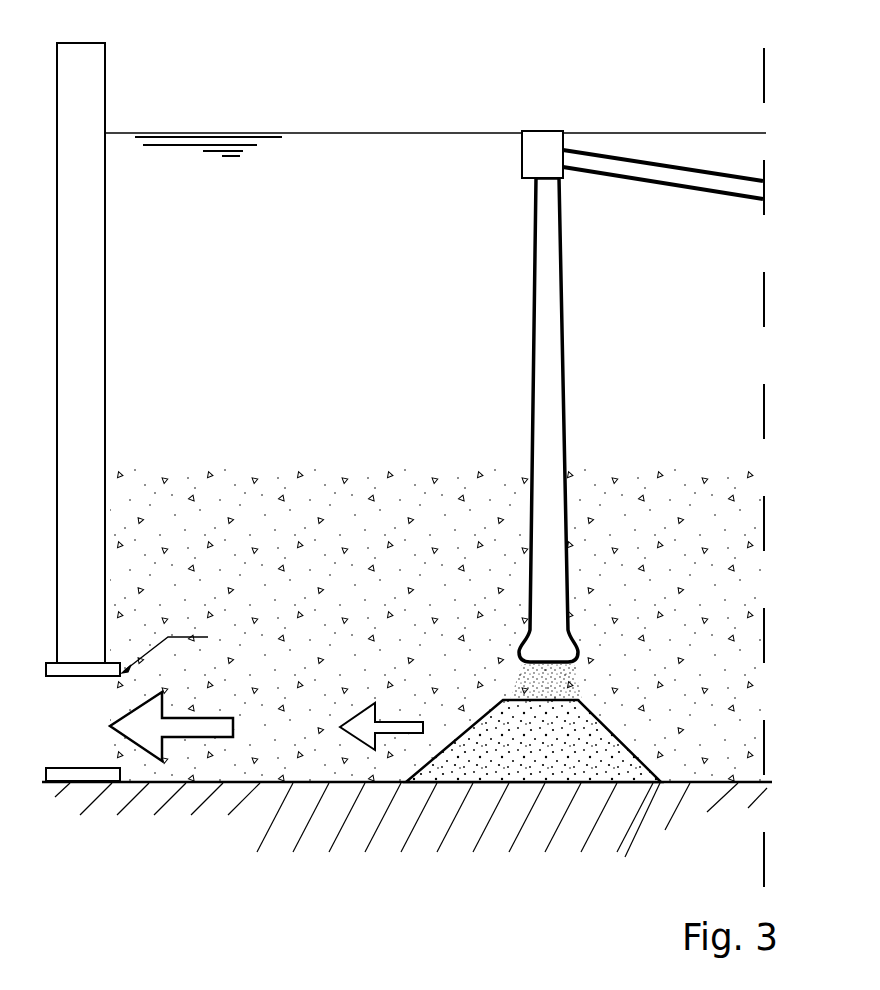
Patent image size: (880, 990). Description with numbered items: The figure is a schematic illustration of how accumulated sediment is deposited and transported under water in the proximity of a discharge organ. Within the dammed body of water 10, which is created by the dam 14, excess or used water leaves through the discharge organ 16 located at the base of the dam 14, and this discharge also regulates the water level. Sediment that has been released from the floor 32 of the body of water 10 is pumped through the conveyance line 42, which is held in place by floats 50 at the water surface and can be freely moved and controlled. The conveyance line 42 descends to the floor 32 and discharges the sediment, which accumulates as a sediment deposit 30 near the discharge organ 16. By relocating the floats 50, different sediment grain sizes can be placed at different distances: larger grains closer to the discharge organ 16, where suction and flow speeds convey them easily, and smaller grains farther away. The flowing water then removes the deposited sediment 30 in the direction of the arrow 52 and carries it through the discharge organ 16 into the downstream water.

The dammed body of water 10 is at (393, 271).
The dam 14 is at (94, 342).
The discharge organ 16 is at (93, 814).
The sediment deposits 30 is at (533, 791).
The floor of the body of water 32 is at (407, 801).
The conveyance line 42 is at (563, 388).
The floats 50 is at (558, 139).
The arrow 52 is at (278, 800).